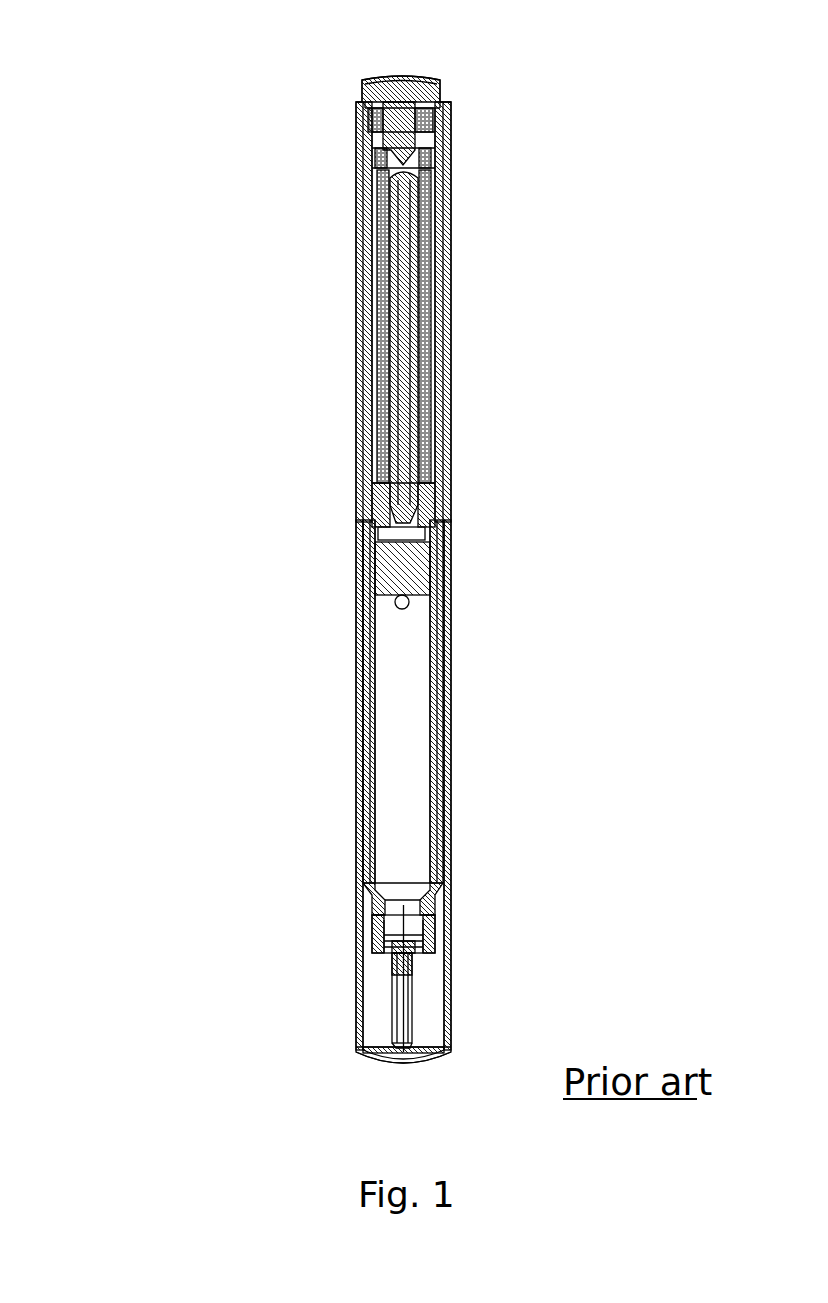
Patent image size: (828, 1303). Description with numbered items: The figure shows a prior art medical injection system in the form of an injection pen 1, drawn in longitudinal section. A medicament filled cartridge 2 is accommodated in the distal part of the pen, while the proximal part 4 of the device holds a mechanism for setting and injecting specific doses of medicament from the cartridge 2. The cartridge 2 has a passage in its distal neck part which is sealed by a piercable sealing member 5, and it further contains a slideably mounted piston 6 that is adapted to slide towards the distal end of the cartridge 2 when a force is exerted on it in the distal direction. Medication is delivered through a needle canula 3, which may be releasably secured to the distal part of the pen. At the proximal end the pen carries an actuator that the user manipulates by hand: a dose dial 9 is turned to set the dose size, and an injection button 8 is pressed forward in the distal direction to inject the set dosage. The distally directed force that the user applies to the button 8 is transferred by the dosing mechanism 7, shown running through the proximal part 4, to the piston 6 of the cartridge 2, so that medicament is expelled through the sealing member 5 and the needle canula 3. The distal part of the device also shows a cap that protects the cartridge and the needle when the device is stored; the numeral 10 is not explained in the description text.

The injection pen 1 is at (222, 433).
The cartridge 2 is at (430, 620).
The needle canula 3 is at (398, 993).
The proximal part 4 is at (447, 190).
The piercable sealing member 5 is at (377, 937).
The piston 6 is at (385, 575).
The dosing mechanism 7 is at (393, 395).
The injection button 8 is at (365, 82).
The dose dial 9 is at (358, 135).
The cartridge holder 10 is at (447, 920).